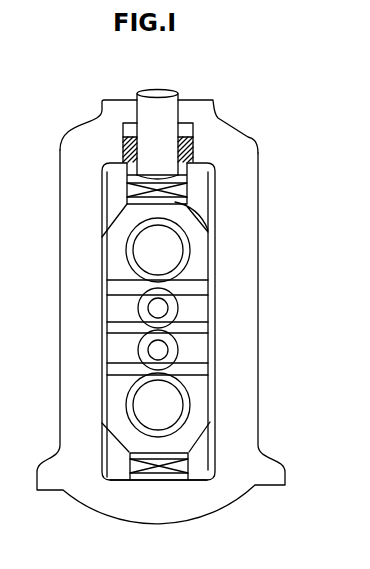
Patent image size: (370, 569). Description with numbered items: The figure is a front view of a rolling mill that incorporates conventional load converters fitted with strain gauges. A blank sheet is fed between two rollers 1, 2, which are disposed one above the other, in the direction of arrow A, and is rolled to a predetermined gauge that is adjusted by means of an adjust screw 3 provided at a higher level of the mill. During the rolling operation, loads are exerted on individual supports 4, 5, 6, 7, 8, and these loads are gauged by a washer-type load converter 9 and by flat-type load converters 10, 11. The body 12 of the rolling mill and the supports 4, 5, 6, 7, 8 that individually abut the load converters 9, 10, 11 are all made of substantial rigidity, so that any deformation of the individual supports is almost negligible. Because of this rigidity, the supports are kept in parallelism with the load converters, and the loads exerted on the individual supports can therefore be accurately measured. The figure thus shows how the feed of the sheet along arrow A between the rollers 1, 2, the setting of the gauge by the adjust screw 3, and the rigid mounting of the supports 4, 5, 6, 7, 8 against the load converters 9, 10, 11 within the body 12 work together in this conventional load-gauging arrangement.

The roller 1 is at (170, 307).
The roller 2 is at (170, 350).
The adjust screw 3 is at (170, 107).
The support 4 is at (188, 114).
The support 5 is at (190, 170).
The support 6 is at (208, 232).
The support 7 is at (188, 455).
The support 8 is at (180, 480).
The washer-type load converter 9 is at (240, 137).
The flat-type load converter 10 is at (185, 187).
The flat-type load converter 11 is at (176, 465).
The body 12 is at (243, 279).
The arrow A is at (110, 328).